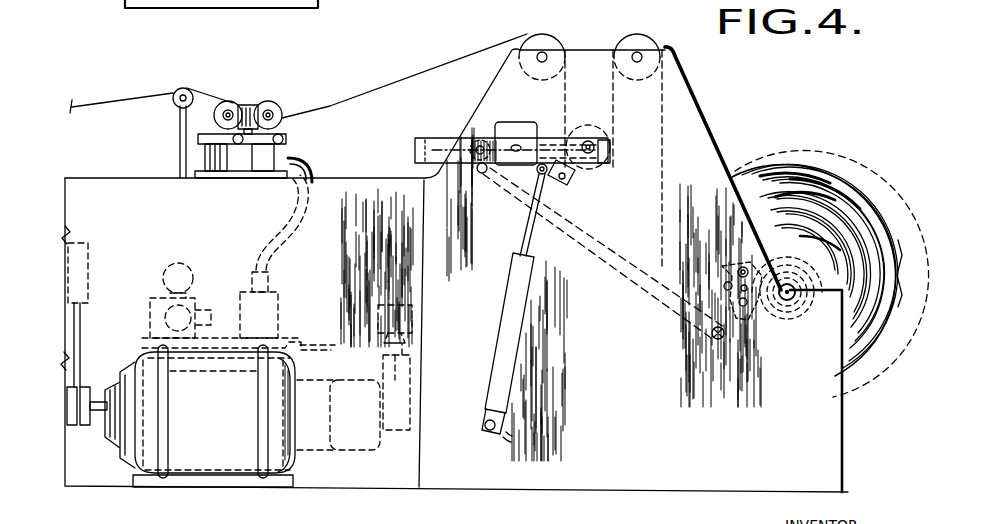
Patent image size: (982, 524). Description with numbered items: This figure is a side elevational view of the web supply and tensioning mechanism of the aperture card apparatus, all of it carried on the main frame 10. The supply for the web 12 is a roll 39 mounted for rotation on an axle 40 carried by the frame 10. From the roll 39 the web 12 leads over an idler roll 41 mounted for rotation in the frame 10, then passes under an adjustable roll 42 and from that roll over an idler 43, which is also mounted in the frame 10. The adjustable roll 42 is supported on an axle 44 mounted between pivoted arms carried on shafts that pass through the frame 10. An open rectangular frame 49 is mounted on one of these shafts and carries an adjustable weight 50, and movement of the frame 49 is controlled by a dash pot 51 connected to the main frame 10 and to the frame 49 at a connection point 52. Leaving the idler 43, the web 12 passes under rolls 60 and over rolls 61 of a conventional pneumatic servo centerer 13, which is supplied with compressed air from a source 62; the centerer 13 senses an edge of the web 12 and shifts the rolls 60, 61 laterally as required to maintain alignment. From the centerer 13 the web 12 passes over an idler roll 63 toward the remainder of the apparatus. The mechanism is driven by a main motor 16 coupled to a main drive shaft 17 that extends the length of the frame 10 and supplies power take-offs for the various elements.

The main frame 10 is at (454, 270).
The web of material 12 is at (413, 78).
The pneumatic aligning mechanism 13 is at (290, 148).
The main motor 16 is at (200, 416).
The main drive shaft 17 is at (94, 275).
The roll 39 is at (832, 186).
The axle 40 is at (808, 294).
The idler roll 41 is at (648, 43).
The adjustable roll 42 is at (585, 130).
The idler 43 is at (535, 38).
The axle 44 is at (603, 164).
The open rectangular frame 49 is at (438, 138).
The adjustable weight 50 is at (520, 125).
The dash pot 51 is at (493, 358).
The connection point 52 is at (548, 177).
The rolls 60 is at (272, 100).
The rolls 61 is at (226, 100).
The compressed air source 62 is at (283, 298).
The idler roll 63 is at (160, 133).